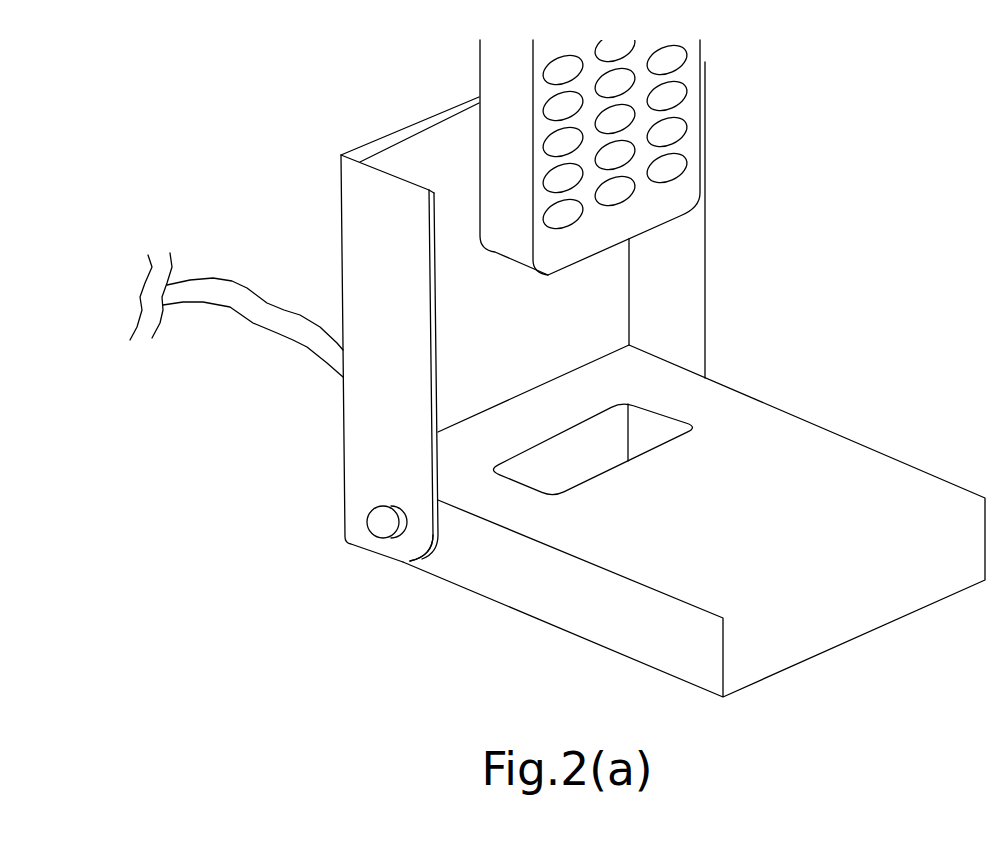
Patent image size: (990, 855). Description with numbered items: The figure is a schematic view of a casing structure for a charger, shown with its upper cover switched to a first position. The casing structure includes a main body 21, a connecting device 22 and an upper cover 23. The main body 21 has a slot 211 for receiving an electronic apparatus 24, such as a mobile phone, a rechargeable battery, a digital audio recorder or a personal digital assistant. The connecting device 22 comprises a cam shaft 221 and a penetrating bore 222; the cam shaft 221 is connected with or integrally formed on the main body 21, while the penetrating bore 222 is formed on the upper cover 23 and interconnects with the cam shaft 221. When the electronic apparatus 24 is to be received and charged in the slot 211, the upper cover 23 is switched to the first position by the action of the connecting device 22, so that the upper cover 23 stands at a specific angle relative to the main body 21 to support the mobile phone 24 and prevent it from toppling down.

The main body 21 is at (694, 511).
The slot 211 is at (653, 430).
The connecting device 22 is at (402, 599).
The cam shaft 221 is at (383, 530).
The penetrating bore 222 is at (446, 579).
The upper cover 23 is at (360, 220).
The electronic apparatus 24 is at (690, 110).